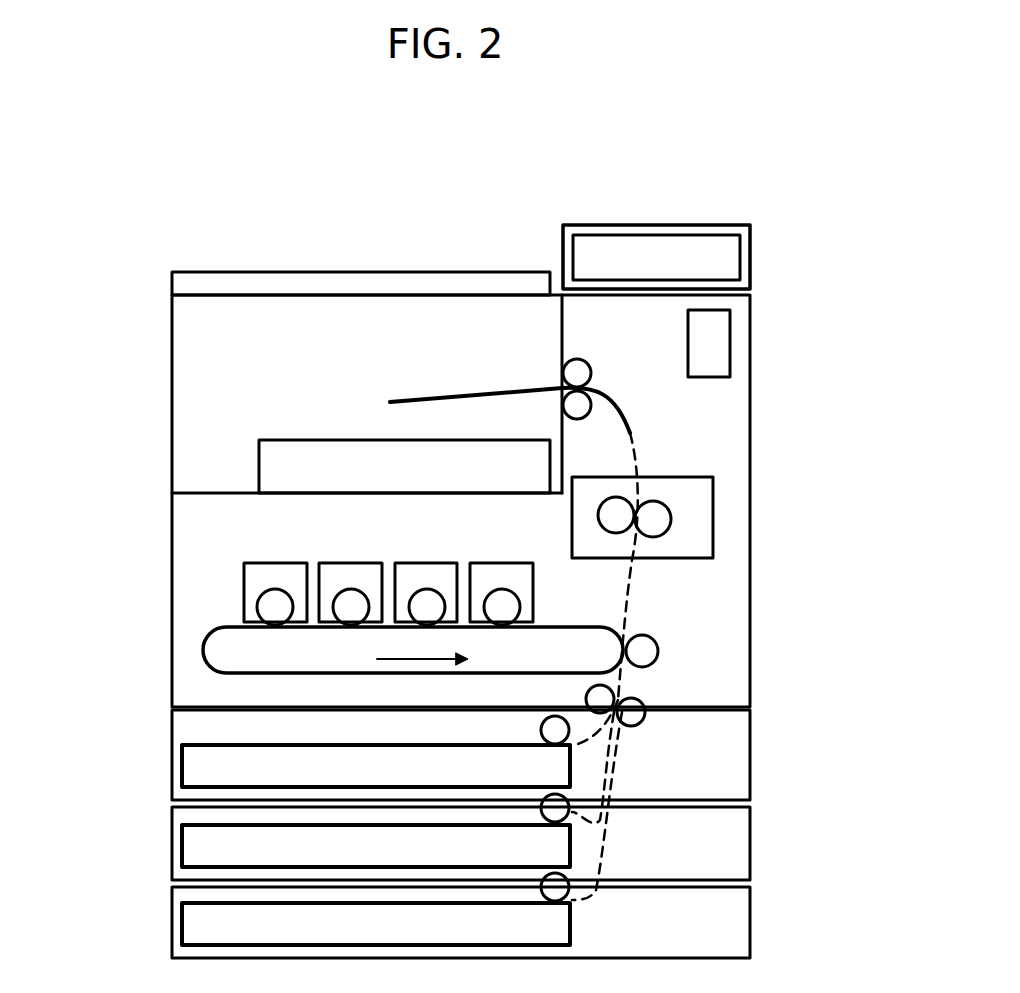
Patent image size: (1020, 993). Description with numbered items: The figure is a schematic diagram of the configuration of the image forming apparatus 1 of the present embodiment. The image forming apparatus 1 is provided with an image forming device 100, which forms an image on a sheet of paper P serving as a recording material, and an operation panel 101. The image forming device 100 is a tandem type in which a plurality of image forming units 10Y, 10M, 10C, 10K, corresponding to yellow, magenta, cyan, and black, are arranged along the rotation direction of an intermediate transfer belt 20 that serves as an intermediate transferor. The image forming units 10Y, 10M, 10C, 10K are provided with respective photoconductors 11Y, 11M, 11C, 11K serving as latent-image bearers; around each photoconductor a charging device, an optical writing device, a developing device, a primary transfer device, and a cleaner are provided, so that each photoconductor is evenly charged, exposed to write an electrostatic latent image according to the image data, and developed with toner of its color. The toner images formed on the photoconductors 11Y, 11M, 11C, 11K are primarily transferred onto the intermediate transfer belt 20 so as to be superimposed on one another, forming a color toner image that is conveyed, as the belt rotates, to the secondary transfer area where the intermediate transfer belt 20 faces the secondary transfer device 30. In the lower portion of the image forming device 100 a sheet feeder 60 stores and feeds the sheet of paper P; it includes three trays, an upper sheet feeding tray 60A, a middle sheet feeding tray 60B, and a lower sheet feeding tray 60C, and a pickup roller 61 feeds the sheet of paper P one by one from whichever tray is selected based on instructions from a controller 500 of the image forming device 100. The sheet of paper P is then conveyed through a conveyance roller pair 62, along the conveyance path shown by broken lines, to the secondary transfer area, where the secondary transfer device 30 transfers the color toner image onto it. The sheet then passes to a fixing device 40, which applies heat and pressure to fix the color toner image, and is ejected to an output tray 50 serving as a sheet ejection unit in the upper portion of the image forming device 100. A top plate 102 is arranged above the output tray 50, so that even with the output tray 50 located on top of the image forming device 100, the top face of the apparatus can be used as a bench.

The image forming apparatus 1 is at (284, 230).
The image forming device 100 is at (146, 368).
The operation panel 101 is at (753, 250).
The top plate 102 is at (200, 270).
The controller 500 is at (730, 370).
The output tray 50 is at (258, 452).
The sheet of paper P is at (517, 390).
The image forming unit 10Y is at (244, 568).
The image forming unit 10M is at (333, 563).
The image forming unit 10C is at (425, 563).
The image forming unit 10K is at (518, 563).
The photoconductor 11Y is at (260, 600).
The photoconductor 11M is at (355, 588).
The photoconductor 11C is at (437, 588).
The photoconductor 11K is at (520, 600).
The intermediate transfer belt 20 is at (233, 673).
The secondary transfer device 30 is at (658, 650).
The fixing device 40 is at (713, 493).
The conveyance roller pair 62 is at (646, 726).
The pickup roller 61 is at (572, 727).
The sheet feeder 60 is at (80, 740).
The upper sheet feeding tray 60A is at (182, 762).
The middle sheet feeding tray 60B is at (182, 840).
The lower sheet feeding tray 60C is at (182, 917).